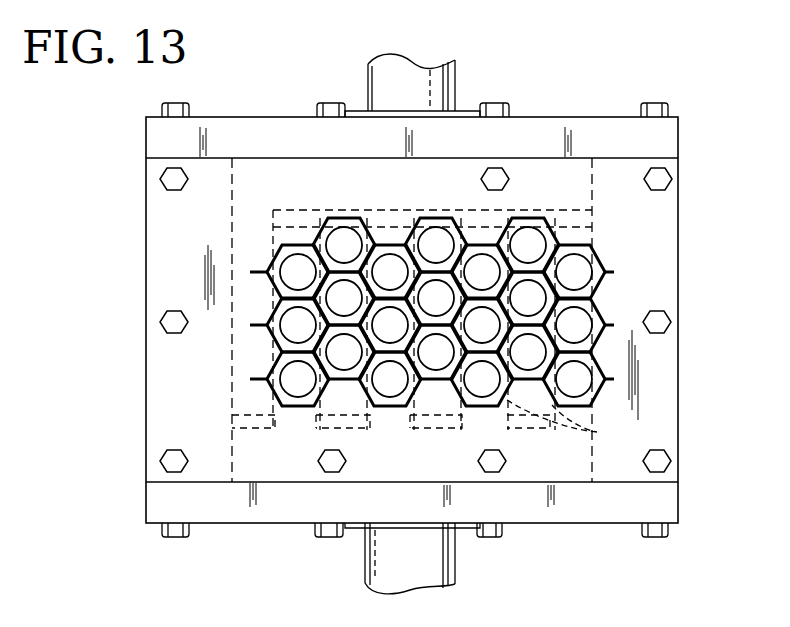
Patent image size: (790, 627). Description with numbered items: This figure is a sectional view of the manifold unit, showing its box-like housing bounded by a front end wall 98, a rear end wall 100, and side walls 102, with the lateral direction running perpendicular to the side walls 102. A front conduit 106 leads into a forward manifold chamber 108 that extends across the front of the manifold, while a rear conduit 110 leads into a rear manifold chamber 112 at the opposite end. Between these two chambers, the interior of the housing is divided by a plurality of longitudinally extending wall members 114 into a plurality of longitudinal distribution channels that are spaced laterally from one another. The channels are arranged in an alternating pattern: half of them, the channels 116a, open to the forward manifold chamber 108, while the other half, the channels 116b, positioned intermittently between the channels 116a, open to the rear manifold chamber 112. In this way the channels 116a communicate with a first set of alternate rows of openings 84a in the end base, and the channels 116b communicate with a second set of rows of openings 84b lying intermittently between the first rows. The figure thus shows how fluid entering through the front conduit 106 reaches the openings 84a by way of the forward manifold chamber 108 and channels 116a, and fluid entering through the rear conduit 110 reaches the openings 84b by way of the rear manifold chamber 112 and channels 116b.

The openings of the first set of rows 84a is at (345, 243).
The openings of the second set of rows 84b is at (302, 384).
The end wall 98 is at (593, 133).
The end wall 100 is at (233, 510).
The side walls 102 is at (656, 380).
The front conduit 106 is at (440, 93).
The forward manifold chamber 108 is at (520, 172).
The rear conduit 110 is at (440, 590).
The rear manifold chamber 112 is at (363, 467).
The wall members 114 is at (567, 420).
The channels 116a is at (438, 243).
The channels 116b is at (488, 418).